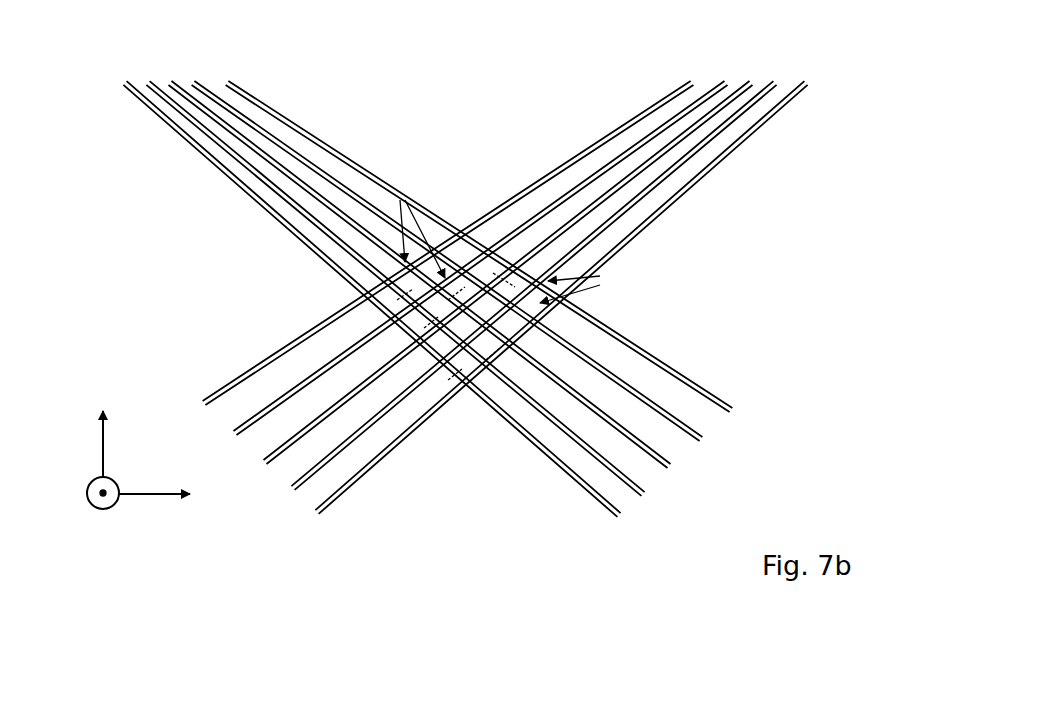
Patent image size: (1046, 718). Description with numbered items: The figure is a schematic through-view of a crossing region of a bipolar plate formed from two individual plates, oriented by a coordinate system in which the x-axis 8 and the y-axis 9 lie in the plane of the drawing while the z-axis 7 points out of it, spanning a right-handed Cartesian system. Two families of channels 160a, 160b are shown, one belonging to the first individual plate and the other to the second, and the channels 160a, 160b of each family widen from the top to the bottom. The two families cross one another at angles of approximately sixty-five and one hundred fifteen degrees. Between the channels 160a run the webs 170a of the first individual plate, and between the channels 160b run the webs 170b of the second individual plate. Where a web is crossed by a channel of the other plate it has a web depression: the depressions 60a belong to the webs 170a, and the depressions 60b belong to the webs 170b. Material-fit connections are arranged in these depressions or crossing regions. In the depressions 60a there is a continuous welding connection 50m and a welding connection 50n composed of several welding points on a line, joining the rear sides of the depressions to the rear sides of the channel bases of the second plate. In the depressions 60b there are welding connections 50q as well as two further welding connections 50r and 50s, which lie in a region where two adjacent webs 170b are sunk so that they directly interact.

The channels of the first individual plate 160a is at (714, 96).
The channels of the second individual plate 160b is at (623, 502).
The webs of the first individual plate 170a is at (784, 93).
The webs of the second individual plate 170b is at (706, 439).
The depressions of the webs of the first individual plate 60a is at (600, 285).
The depressions of the webs of the second individual plate 60b is at (405, 200).
The continuous welding connection 50m is at (496, 362).
The welding connection composed of several welding points 50n is at (503, 290).
The welding connection 50q is at (407, 297).
The welding connection 50r is at (430, 320).
The welding connection 50s is at (458, 297).
The z axis 7 is at (101, 510).
The x-axis 8 is at (140, 492).
The y-axis 9 is at (105, 448).